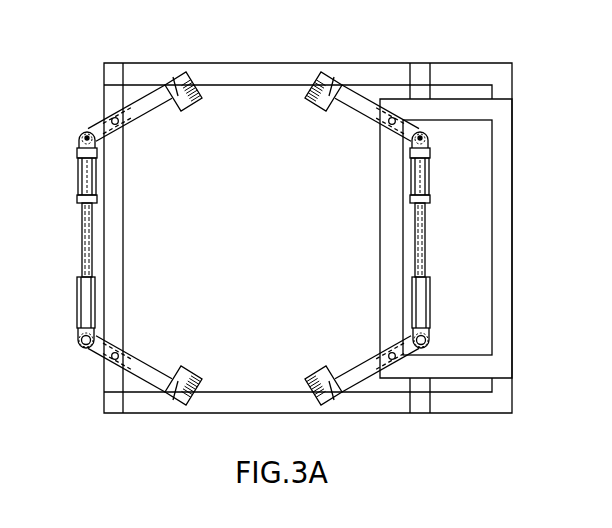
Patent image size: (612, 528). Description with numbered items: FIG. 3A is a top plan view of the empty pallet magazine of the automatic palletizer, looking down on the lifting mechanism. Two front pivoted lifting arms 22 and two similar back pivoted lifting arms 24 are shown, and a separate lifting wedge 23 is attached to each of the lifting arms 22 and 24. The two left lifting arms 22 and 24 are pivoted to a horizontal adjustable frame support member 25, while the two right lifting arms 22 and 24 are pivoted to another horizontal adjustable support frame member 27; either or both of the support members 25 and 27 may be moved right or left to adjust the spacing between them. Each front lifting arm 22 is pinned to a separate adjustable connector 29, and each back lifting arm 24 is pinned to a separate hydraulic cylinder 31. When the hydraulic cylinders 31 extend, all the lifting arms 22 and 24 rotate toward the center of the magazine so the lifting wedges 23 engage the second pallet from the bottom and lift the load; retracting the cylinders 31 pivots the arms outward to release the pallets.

The front pivoted lifting arm 22 is at (133, 368).
The lifting wedge 23 is at (190, 104).
The back pivoted lifting arm 24 is at (140, 103).
The horizontal adjustable frame support member 25 is at (112, 322).
The horizontal adjustable support frame member 27 is at (390, 323).
The adjustable connector 29 is at (85, 323).
The hydraulic cylinder 31 is at (85, 178).